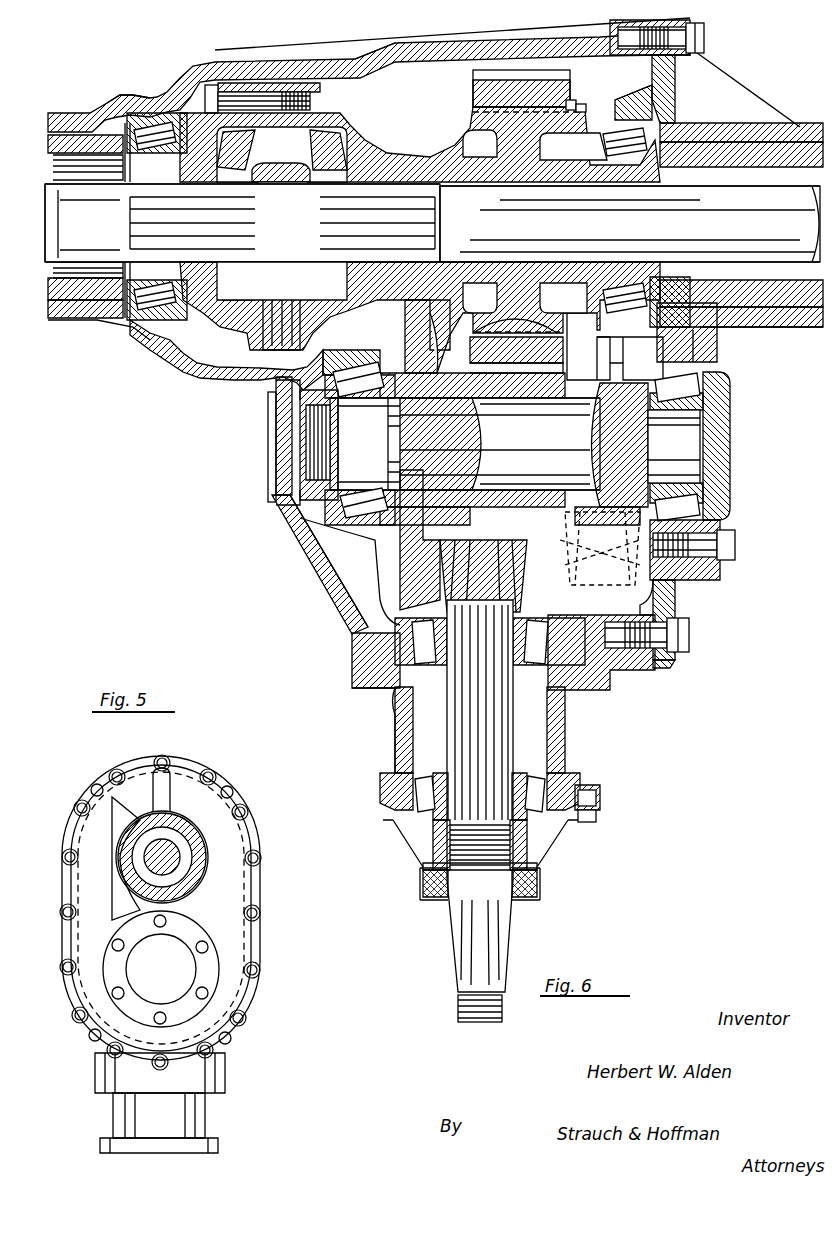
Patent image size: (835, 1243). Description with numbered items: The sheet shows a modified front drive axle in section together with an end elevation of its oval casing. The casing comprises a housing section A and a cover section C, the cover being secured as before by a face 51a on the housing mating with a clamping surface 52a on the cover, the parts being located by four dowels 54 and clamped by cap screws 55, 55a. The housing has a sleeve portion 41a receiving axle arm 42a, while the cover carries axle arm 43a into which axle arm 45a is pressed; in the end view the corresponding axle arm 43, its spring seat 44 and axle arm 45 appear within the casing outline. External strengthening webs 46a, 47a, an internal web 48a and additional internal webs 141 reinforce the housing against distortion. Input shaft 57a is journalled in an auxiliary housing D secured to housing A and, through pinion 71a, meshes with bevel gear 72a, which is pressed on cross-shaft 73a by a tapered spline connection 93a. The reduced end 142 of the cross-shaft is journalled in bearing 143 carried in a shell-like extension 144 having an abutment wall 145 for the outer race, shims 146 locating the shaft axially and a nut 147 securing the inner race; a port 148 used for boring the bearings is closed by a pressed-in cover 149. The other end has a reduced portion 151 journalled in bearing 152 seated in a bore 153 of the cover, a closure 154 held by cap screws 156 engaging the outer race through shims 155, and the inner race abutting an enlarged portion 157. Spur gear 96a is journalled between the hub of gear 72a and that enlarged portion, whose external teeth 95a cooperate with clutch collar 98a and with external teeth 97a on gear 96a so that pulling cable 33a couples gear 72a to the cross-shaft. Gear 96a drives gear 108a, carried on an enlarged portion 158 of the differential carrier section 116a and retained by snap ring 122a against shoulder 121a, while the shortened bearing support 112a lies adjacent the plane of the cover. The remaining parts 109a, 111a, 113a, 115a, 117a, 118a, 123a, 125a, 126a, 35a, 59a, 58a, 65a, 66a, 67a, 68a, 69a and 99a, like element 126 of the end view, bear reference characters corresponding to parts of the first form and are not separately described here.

In FIG. 6, the internal web 141 is at (395, 58).
In FIG. 6, the external strengthening web 46a is at (452, 34).
In FIG. 6, the cap screw 55a is at (704, 38).
In FIG. 6, the cover wall 118a is at (212, 80).
In FIG. 6, the bearing boss 109a is at (160, 86).
In FIG. 6, the strengthening web 47a is at (738, 80).
In FIG. 6, the spur gear 108a is at (472, 95).
In FIG. 6, the snap ring 122a is at (574, 100).
In FIG. 6, the internal web 48a is at (640, 75).
In FIG. 6, the lock pin 123a is at (600, 102).
In FIG. 6, the bearing support 112a is at (658, 105).
In FIG. 6, the bolt 117a is at (298, 84).
In FIG. 6, the shoulder 121a is at (472, 108).
In FIG. 6, the enlarged portion 158 is at (468, 116).
In FIG. 6, the differential carrier section 116a is at (452, 160).
In FIG. 6, the side gear 115a is at (200, 120).
In FIG. 6, the bearing 113a is at (600, 150).
In FIG. 6, the bearing 111a is at (123, 158).
In FIG. 6, the axle arm 45a is at (720, 160).
In FIG. 6, the axle shaft 125a is at (108, 216).
In FIG. 6, the axle shaft 126a is at (642, 216).
In FIG. 6, the axle arm 42a is at (96, 302).
In FIG. 6, the sleeve portion 41a is at (68, 322).
In FIG. 6, the axle arm 43a is at (795, 330).
In FIG. 6, the shell-like extension 144 is at (358, 352).
In FIG. 6, the clutch collar 98a is at (602, 362).
In FIG. 6, the lock nut 99a is at (624, 362).
In FIG. 6, the shim 155 is at (712, 345).
In FIG. 6, the external teeth 97a is at (578, 380).
In FIG. 6, the bearing 152 is at (710, 378).
In FIG. 6, the nut 147 is at (288, 402).
In FIG. 6, the bearing 143 is at (348, 402).
In FIG. 6, the tapered spline connection 93a is at (388, 406).
In FIG. 6, the external teeth 95a is at (590, 419).
In FIG. 6, the spur gear 96a is at (542, 424).
In FIG. 6, the cross-shaft 73a is at (480, 441).
In FIG. 6, the enlarged portion 157 is at (690, 412).
In FIG. 6, the reduced portion 151 is at (684, 443).
In FIG. 6, the cover 149 is at (268, 436).
In FIG. 6, the reduced end 142 is at (375, 443).
In FIG. 6, the shaft 35a is at (548, 475).
In FIG. 6, the closure 154 is at (730, 460).
In FIG. 6, the port 148 is at (270, 492).
In FIG. 6, the bore 153 is at (715, 524).
In FIG. 6, the abutment wall 145 is at (298, 505).
In FIG. 6, the cap screw 156 is at (735, 545).
In FIG. 6, the shim 146 is at (305, 538).
In FIG. 6, the cable 33a is at (540, 572).
In FIG. 6, the bevel gear 72a is at (412, 586).
In FIG. 6, the pinion 71a is at (530, 600).
In FIG. 6, the housing section A is at (330, 598).
In FIG. 6, the cover section C is at (675, 585).
In FIG. 6, the bearing 59a is at (422, 666).
In FIG. 6, the clamping surface 52a is at (660, 652).
In FIG. 6, the face 51a is at (638, 665).
In FIG. 6, the auxiliary housing D is at (395, 735).
In FIG. 6, the bolt 66a is at (600, 796).
In FIG. 6, the nut 67a is at (598, 818).
In FIG. 6, the bearing 58a is at (412, 812).
In FIG. 6, the nut 65a is at (433, 845).
In FIG. 6, the seal cone 68a is at (548, 838).
In FIG. 6, the seal 69a is at (541, 886).
In FIG. 6, the input shaft 57a is at (504, 932).
In FIG. 5, the dowel 54 is at (92, 785).
In FIG. 5, the cap screw 55 is at (66, 850).
In FIG. 5, the axle shaft 126 is at (170, 845).
In FIG. 5, the axle arm 45 is at (196, 840).
In FIG. 5, the axle arm 43 is at (192, 884).
In FIG. 5, the spring seat 44 is at (112, 902).